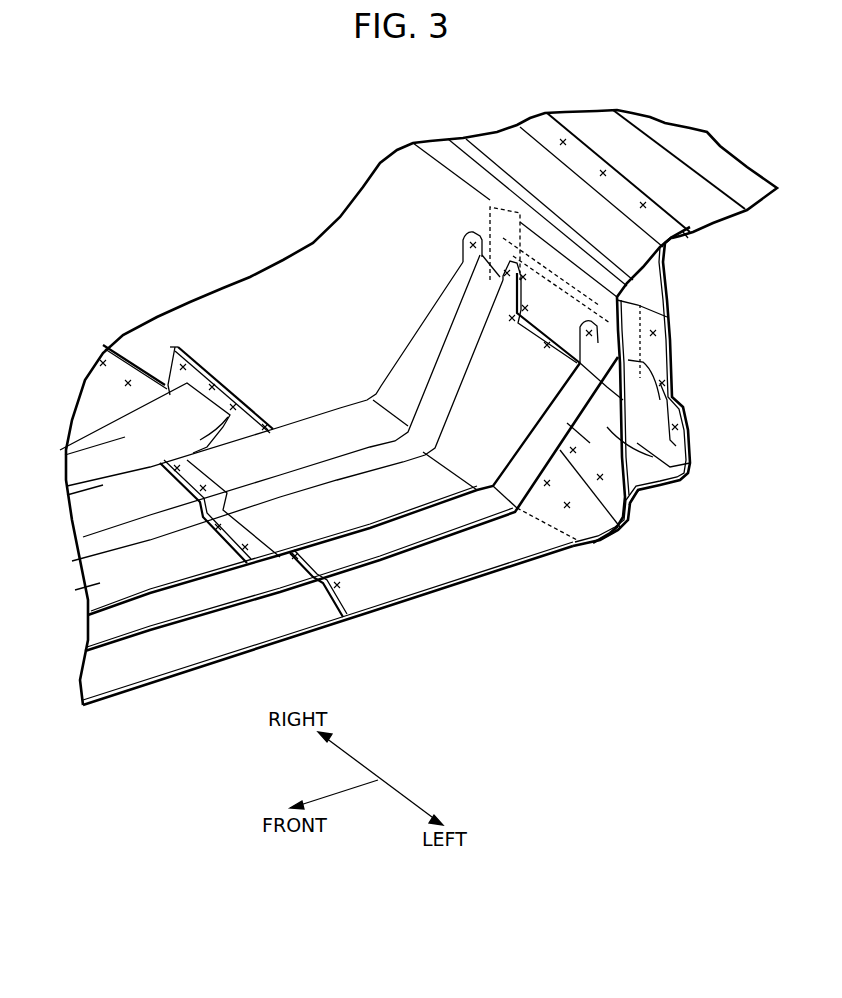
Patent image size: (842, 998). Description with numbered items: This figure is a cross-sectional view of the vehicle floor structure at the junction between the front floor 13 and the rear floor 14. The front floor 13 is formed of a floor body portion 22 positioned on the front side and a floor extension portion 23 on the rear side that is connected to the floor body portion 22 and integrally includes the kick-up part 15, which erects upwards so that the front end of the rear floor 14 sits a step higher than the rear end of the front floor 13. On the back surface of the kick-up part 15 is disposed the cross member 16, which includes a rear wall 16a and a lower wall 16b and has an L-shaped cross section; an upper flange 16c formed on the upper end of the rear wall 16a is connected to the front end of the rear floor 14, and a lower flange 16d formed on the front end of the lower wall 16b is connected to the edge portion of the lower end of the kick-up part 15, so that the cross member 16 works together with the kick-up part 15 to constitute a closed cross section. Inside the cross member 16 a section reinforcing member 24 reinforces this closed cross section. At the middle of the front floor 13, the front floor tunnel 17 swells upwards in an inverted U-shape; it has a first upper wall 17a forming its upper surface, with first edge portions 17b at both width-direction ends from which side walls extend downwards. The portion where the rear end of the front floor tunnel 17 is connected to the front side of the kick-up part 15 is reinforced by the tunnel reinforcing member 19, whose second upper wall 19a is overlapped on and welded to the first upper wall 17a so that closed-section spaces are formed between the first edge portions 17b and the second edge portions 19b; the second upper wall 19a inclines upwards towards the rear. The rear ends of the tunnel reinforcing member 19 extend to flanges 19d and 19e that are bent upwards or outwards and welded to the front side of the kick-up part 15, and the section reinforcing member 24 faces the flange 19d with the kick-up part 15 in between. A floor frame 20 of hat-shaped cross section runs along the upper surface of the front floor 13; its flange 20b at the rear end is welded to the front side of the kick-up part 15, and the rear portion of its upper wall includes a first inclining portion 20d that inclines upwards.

The front floor 13 is at (450, 650).
The rear floor 14 is at (707, 153).
The kick-up part 15 is at (650, 456).
The cross member 16 is at (670, 417).
The rear wall 16a is at (676, 376).
The lower wall 16b is at (654, 484).
The upper flange 16c is at (688, 240).
The lower flange 16d is at (603, 549).
The front floor tunnel 17 is at (63, 521).
The first upper wall 17a is at (100, 585).
The first edge portion 17b is at (80, 485).
The tunnel reinforcing member 19 is at (345, 411).
The second upper wall 19a is at (312, 503).
The second edge portion 19b is at (343, 405).
The flange 19d is at (530, 335).
The flange 19e is at (462, 256).
The floor frame 20 is at (165, 393).
The flange 20b is at (207, 365).
The first inclining portion 20d is at (127, 428).
The floor body portion 22 is at (310, 630).
The floor extension portion 23 is at (458, 570).
The section reinforcing member 24 is at (642, 345).